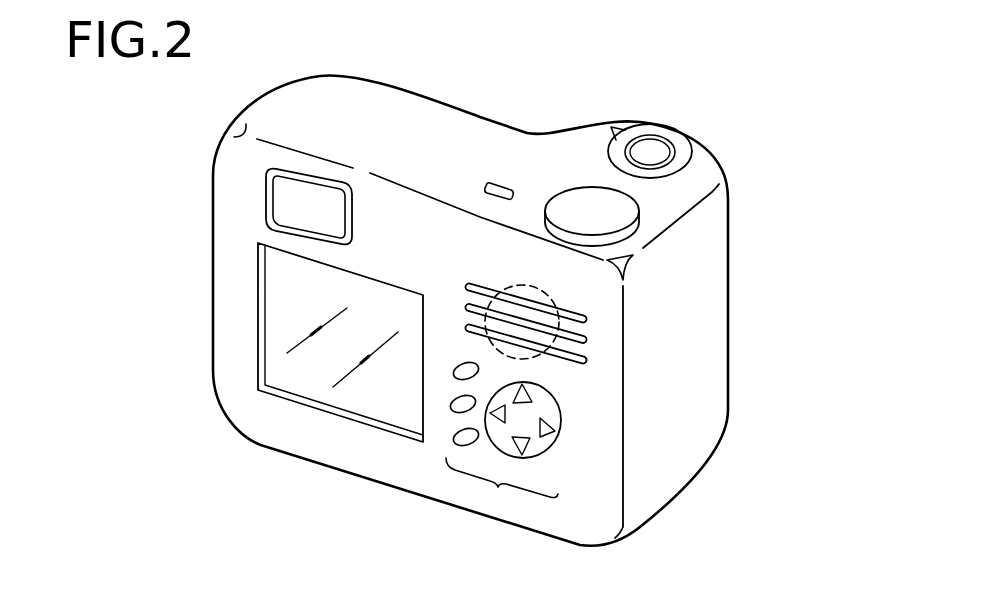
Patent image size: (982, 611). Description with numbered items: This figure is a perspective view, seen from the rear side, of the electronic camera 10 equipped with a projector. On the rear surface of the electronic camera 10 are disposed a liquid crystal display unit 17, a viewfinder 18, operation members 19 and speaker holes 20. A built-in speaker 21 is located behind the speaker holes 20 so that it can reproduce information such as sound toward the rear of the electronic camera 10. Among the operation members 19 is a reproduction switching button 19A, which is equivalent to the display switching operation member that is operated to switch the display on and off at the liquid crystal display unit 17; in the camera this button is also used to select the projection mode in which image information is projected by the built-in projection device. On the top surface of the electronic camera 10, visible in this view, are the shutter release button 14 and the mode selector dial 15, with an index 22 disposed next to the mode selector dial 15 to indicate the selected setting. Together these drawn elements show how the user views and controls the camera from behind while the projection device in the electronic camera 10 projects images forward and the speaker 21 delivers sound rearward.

The electronic camera equipped with a projector 10 is at (750, 326).
The shutter release button 14 is at (655, 150).
The mode selector dial 15 is at (575, 193).
The liquid crystal display unit 17 is at (325, 412).
The viewfinder 18 is at (280, 197).
The operation members 19 is at (498, 488).
The reproduction switching button 19A is at (452, 440).
The speaker holes 20 is at (599, 300).
The built-in speaker 21 is at (530, 360).
The index 22 is at (493, 185).